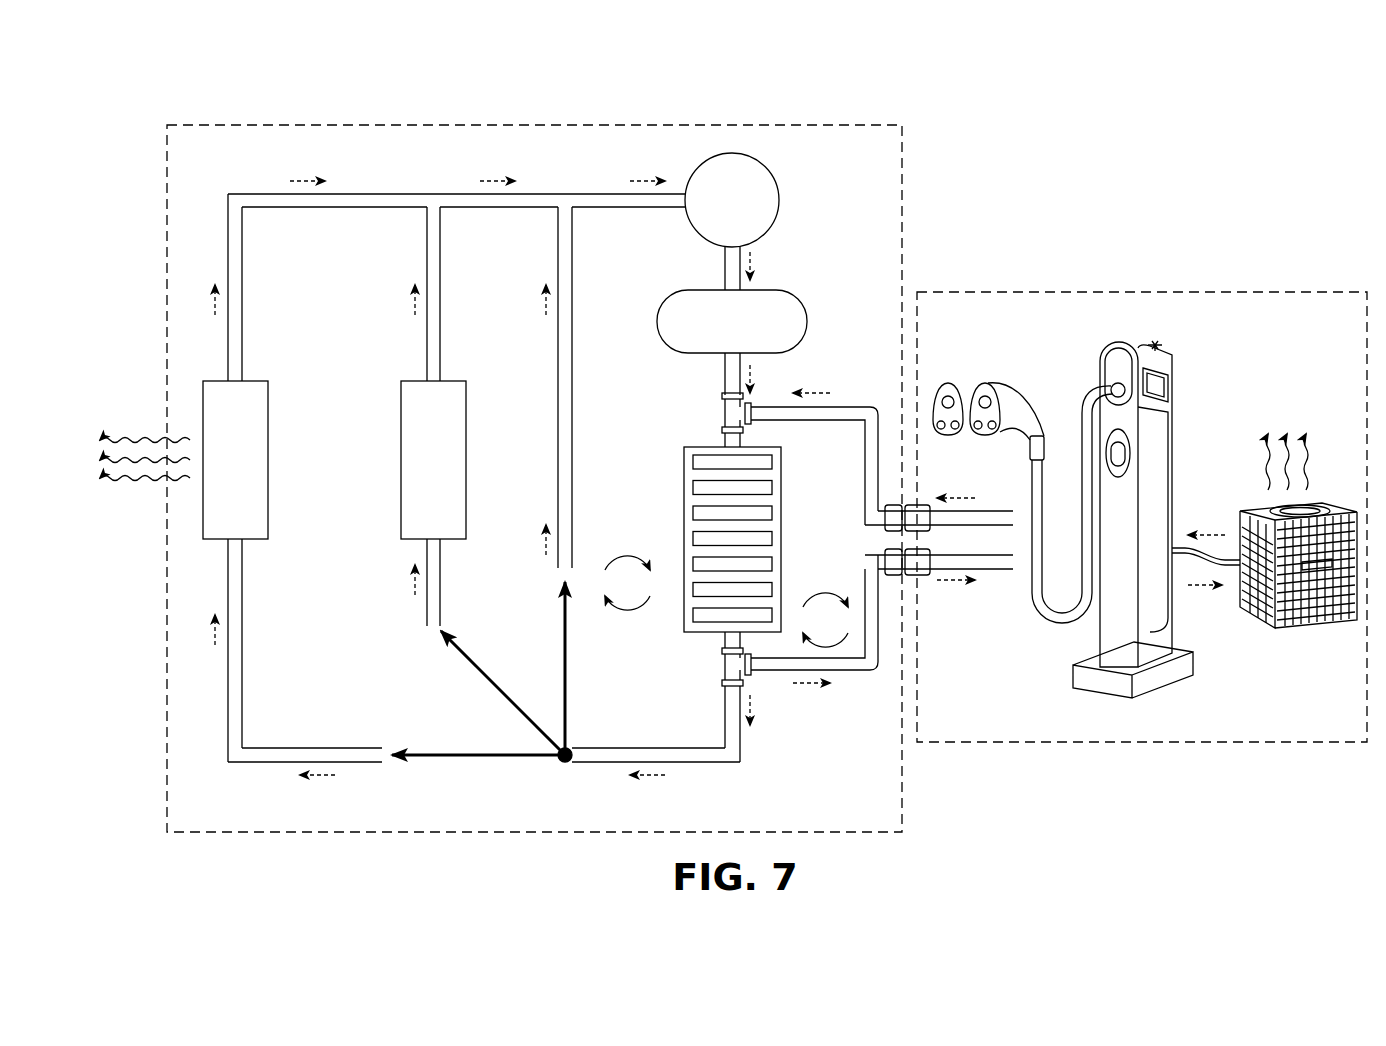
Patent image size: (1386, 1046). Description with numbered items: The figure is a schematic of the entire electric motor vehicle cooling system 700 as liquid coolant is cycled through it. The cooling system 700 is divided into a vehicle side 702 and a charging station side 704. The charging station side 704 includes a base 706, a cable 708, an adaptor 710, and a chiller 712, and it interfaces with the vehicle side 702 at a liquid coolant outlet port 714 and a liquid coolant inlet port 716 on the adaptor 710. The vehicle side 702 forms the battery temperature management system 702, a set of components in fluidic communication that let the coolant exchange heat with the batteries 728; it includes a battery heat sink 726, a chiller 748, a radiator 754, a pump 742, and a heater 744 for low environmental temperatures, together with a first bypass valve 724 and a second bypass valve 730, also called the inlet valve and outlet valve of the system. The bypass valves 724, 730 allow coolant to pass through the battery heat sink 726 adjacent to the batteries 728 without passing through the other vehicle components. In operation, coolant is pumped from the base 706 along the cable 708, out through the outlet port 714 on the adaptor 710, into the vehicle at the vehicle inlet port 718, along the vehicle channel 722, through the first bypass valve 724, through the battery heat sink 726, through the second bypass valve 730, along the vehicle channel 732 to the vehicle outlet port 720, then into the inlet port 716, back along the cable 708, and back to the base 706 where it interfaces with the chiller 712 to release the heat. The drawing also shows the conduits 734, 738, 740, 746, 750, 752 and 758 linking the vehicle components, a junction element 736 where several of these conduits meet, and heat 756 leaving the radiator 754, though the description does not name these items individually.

The cooling system 700 is at (1143, 108).
The vehicle side 702 is at (258, 124).
The charging station side 704 is at (1310, 291).
The base 706 is at (1158, 438).
The cable 708 is at (1073, 400).
The adaptor 710 is at (1005, 390).
The chiller 712 is at (1318, 634).
The liquid coolant outlet port 714 is at (931, 505).
The liquid coolant inlet port 716 is at (931, 576).
The vehicle inlet port 718 is at (882, 528).
The vehicle outlet port 720 is at (882, 553).
The vehicle channel 722 is at (871, 406).
The first bypass valve 724 is at (722, 415).
The battery heat sink 726 is at (684, 498).
The batteries 728 is at (688, 460).
The second bypass valve 730 is at (722, 666).
The vehicle channel 732 is at (843, 672).
The coolant conduit 734 is at (615, 747).
The valve 736 is at (561, 766).
The coolant conduit 738 is at (558, 372).
The coolant conduit 740 is at (645, 208).
The pump 742 is at (782, 198).
The heater 744 is at (806, 312).
The coolant conduit 746 is at (441, 598).
The chiller 748 is at (400, 448).
The coolant conduit 750 is at (494, 208).
The coolant conduit 752 is at (338, 747).
The radiator 754 is at (269, 474).
The heat rejection 756 is at (135, 438).
The coolant conduit 758 is at (342, 208).